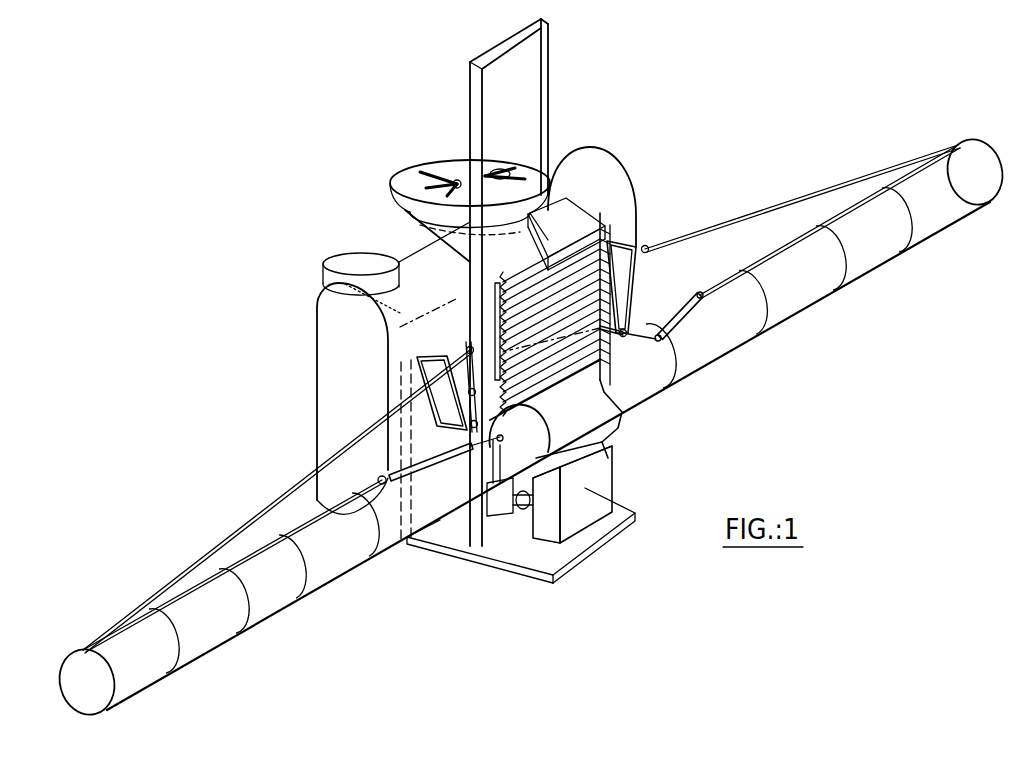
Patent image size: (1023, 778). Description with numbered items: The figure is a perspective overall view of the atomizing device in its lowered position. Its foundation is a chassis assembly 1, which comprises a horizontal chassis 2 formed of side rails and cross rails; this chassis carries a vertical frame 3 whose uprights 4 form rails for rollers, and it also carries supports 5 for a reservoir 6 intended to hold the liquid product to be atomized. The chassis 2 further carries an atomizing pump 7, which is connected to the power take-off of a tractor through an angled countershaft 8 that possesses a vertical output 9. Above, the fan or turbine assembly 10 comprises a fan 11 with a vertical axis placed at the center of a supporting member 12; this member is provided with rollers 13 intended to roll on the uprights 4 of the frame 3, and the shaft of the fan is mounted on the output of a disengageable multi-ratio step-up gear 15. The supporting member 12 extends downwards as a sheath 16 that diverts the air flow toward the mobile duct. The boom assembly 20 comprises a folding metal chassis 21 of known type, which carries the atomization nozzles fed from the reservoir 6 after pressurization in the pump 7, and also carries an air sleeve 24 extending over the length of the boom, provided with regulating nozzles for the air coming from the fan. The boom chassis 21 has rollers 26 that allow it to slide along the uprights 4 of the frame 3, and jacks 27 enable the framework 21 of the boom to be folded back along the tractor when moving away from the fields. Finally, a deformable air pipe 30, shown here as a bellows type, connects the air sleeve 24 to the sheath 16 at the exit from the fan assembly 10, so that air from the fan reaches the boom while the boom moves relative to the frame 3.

The chassis assembly 1 is at (610, 553).
The horizontal chassis 2 is at (441, 548).
The vertical frame 3 is at (508, 281).
The uprights 4 is at (549, 47).
The supports 5 is at (361, 565).
The reservoir 6 is at (330, 386).
The atomizing pump 7 is at (548, 527).
The angled countershaft 8 is at (500, 500).
The vertical output 9 is at (615, 428).
The turbine assembly 10 is at (378, 170).
The fan 11 is at (456, 182).
The supporting member 12 is at (503, 165).
The rollers 13 is at (504, 258).
The disengageable multi-ratio step-up gear 15 is at (405, 203).
The sheath 16 is at (583, 227).
The boom assembly 20 is at (818, 184).
The folding metal chassis 21 is at (226, 540).
The air sleeve 24 is at (868, 250).
The rollers 26 is at (468, 347).
The jacks 27 is at (420, 470).
The deformable air pipe 30 is at (603, 316).